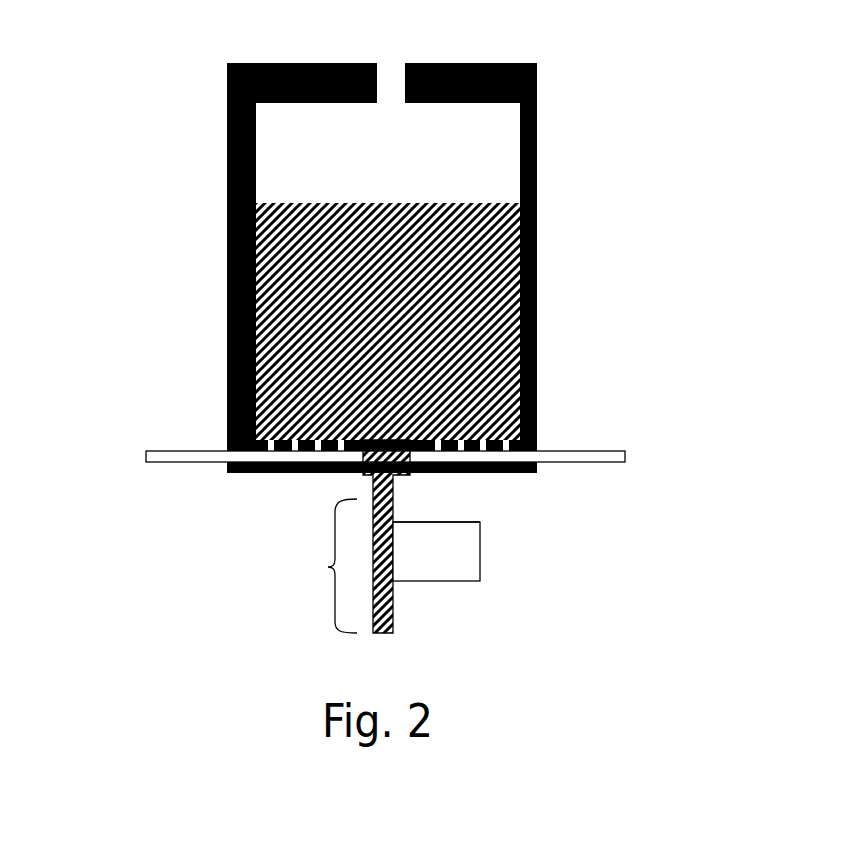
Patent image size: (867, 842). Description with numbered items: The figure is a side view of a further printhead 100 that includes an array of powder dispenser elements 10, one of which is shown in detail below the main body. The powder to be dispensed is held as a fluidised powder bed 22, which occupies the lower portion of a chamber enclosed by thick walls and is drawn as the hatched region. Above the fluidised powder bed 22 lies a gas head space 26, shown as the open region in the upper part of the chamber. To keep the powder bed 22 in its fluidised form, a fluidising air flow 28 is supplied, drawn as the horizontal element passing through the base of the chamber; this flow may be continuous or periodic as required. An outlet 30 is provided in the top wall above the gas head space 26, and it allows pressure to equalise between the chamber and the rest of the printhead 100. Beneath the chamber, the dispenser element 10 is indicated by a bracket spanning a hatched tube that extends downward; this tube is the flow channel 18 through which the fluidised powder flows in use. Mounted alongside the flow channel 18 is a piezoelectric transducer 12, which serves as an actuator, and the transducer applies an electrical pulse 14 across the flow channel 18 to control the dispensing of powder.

The printhead 100 is at (383, 325).
The fluidised powder bed 22 is at (447, 310).
The gas head space 26 is at (447, 158).
The outlet 30 is at (395, 45).
The fluidising air flow 28 is at (632, 459).
The flow channel 18 is at (405, 630).
The piezoelectric transducer 12 is at (492, 559).
The electrical pulse 14 is at (492, 536).
The powder dispenser element 10 is at (437, 544).